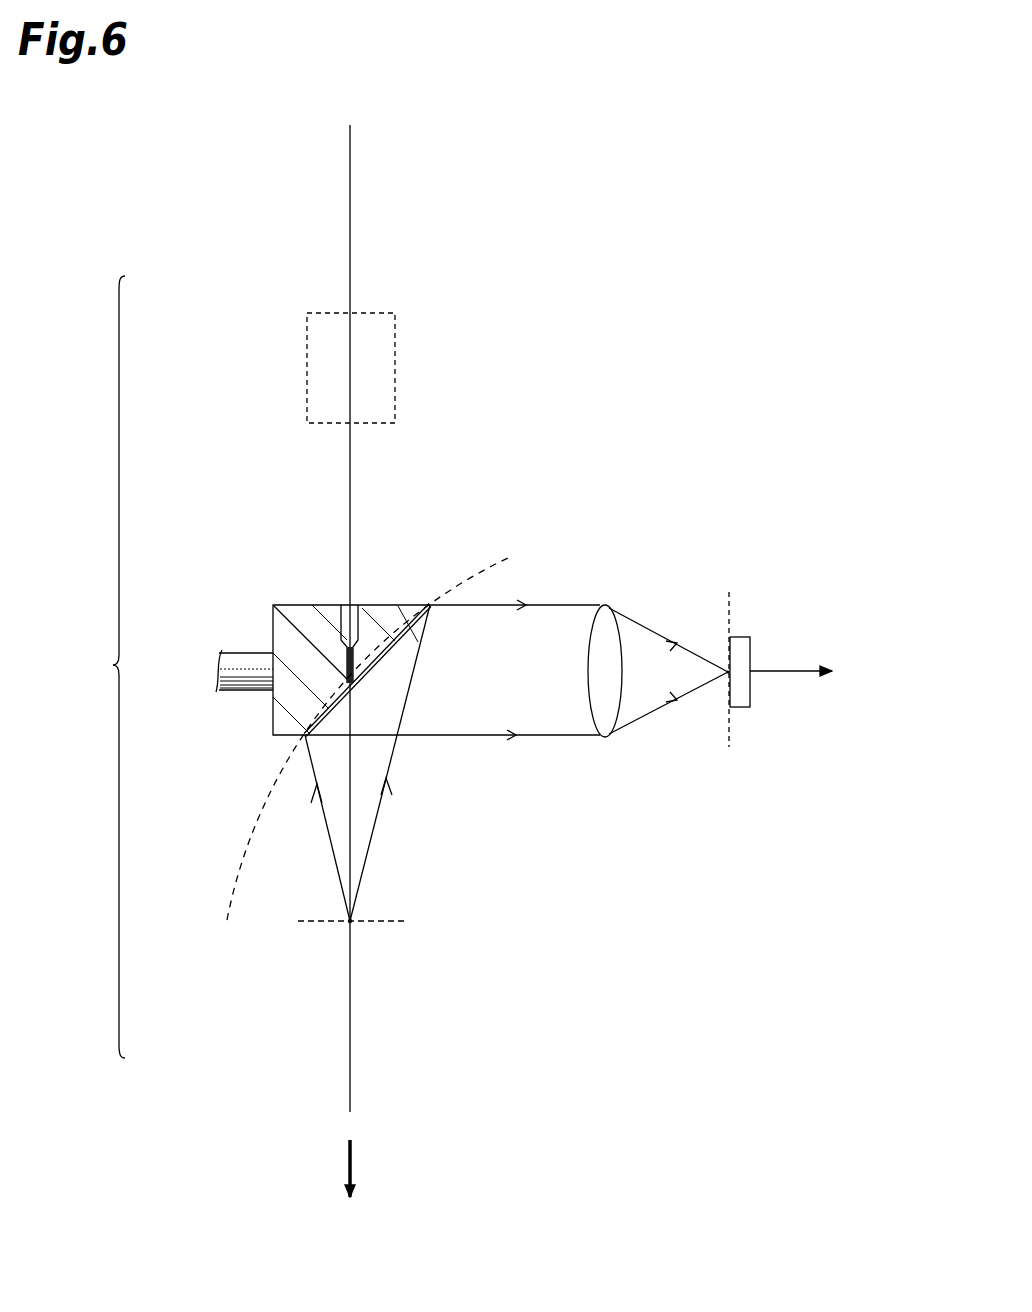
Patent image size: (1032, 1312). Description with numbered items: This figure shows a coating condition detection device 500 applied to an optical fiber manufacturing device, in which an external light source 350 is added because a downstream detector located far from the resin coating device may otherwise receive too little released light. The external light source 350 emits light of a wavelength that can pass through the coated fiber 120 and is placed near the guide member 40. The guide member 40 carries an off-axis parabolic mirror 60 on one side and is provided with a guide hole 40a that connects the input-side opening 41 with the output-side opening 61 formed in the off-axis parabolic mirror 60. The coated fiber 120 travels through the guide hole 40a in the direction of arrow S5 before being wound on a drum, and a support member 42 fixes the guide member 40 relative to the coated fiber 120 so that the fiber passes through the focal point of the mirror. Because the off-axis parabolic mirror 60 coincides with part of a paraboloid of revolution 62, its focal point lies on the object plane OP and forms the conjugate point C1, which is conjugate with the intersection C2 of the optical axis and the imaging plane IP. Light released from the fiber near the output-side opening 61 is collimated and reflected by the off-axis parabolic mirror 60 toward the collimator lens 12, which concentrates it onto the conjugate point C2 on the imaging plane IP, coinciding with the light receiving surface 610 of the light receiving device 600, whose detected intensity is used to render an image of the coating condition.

The coated fiber 120 is at (351, 200).
The external light source 350 is at (396, 370).
The coating condition detection device 500 is at (95, 667).
The guide member 40 is at (310, 620).
The guide hole 40a is at (368, 627).
The input-side opening 41 is at (359, 627).
The support member 42 is at (238, 660).
The off-axis parabolic mirror 60 is at (418, 642).
The output-side opening 61 is at (367, 681).
The paraboloid of revolution 62 is at (233, 882).
The collimator lens 12 is at (605, 605).
The light receiving surface 610 is at (727, 650).
The light receiving device 600 is at (752, 645).
The imaging plane IP is at (733, 687).
The object plane OP is at (375, 922).
The conjugate point C1 is at (350, 923).
The intersection C2 is at (727, 673).
The arrow S5 is at (352, 1160).